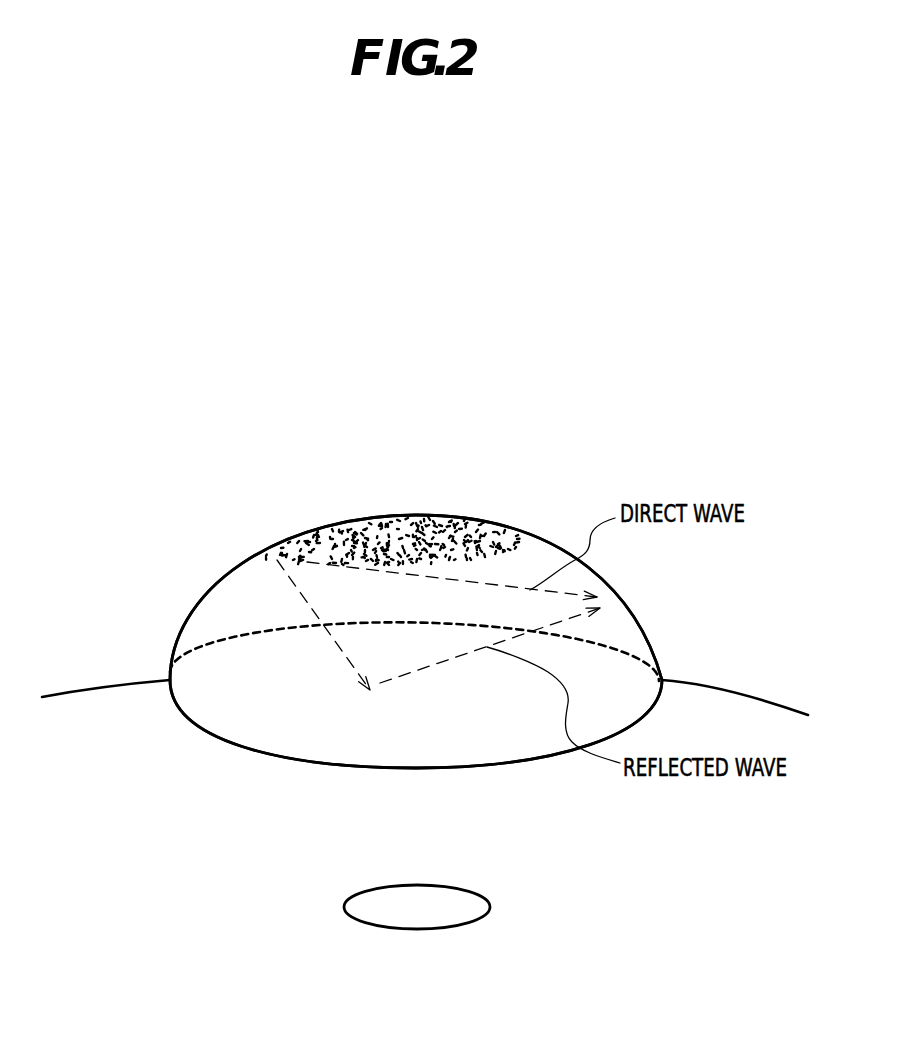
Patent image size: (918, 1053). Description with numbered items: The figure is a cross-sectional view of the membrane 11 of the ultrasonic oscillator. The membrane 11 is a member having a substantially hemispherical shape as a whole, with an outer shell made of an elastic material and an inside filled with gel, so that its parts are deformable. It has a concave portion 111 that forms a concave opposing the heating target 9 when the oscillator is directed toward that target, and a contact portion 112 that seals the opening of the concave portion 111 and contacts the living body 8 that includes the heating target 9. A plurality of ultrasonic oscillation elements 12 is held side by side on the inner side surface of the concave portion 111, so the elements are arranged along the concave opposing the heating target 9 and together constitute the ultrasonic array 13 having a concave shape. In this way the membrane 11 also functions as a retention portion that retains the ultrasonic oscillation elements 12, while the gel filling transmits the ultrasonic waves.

The living body 8 is at (730, 687).
The heating target 9 is at (490, 907).
The membrane 11 is at (652, 648).
The concave portion 111 is at (219, 584).
The contact portion 112 is at (260, 750).
The ultrasonic oscillation elements 12 is at (275, 555).
The ultrasonic array 13 is at (513, 530).